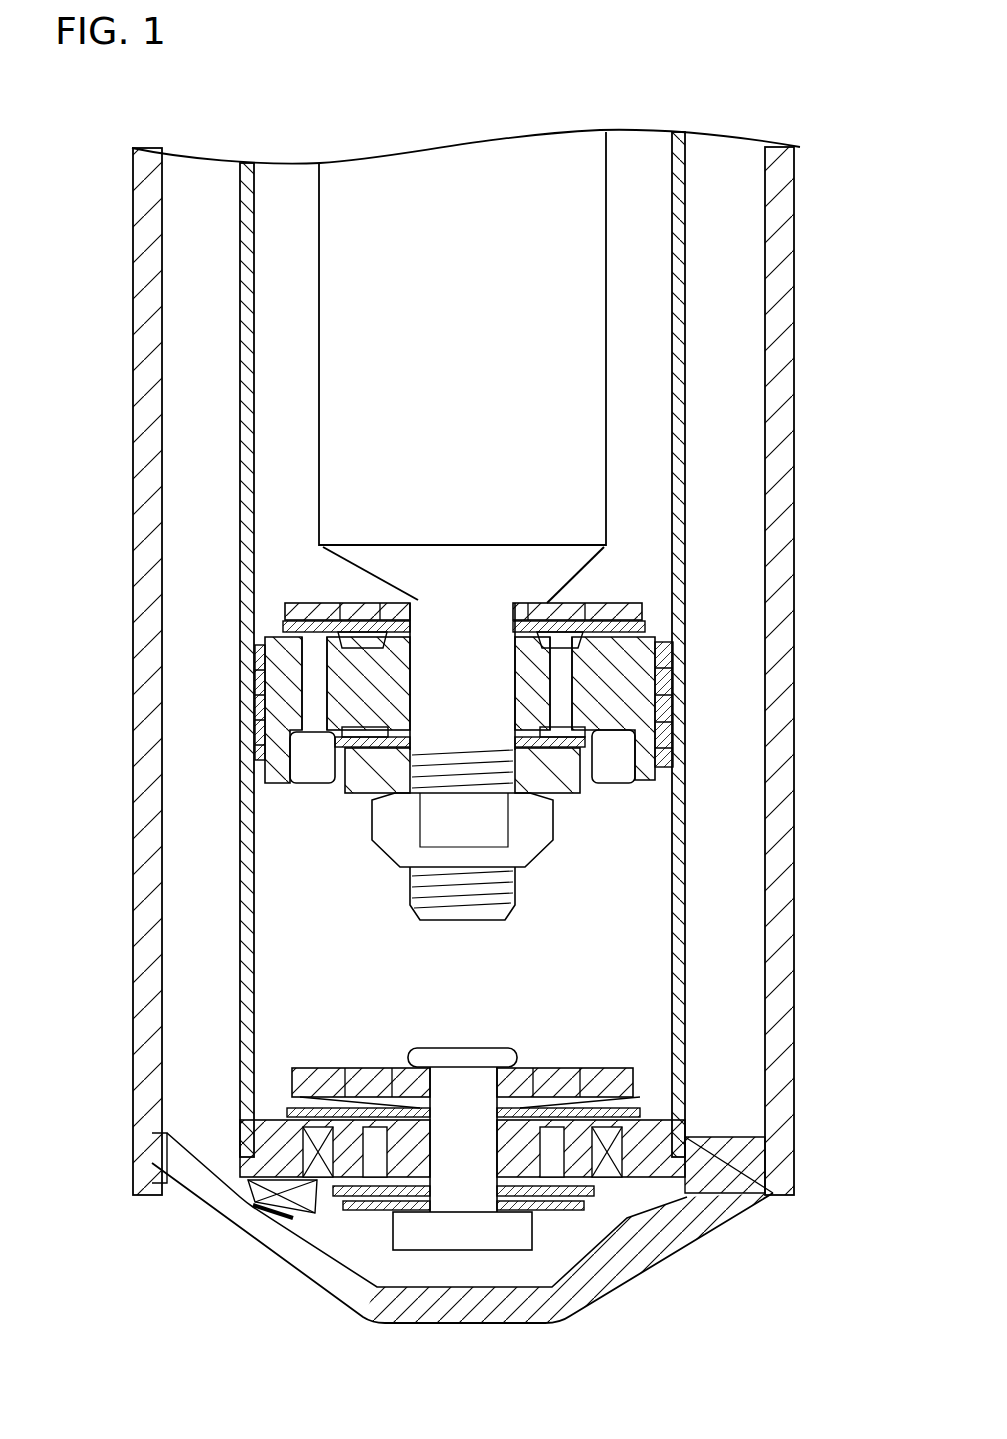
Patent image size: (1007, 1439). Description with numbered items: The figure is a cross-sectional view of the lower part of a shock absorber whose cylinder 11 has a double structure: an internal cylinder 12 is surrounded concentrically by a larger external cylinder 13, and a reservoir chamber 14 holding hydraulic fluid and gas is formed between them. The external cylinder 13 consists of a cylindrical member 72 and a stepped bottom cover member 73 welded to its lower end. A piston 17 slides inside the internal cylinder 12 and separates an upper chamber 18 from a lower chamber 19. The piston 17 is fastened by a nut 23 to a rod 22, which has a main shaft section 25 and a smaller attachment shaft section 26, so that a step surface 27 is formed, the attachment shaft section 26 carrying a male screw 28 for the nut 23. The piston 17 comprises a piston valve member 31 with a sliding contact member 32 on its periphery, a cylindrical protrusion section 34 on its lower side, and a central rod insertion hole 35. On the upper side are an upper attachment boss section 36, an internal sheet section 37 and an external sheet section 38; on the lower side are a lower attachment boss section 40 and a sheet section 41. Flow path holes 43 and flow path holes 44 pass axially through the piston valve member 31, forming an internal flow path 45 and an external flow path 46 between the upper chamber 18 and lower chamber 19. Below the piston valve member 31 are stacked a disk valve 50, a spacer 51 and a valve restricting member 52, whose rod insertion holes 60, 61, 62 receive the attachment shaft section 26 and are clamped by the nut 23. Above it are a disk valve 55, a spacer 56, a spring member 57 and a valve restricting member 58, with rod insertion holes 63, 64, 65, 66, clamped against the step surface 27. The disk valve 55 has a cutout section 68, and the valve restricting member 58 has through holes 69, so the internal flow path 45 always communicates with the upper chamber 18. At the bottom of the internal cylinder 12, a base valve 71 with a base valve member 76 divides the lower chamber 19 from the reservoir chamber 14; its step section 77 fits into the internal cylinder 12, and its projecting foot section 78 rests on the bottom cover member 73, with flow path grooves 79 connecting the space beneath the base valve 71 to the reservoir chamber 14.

The cylinder 11 is at (837, 62).
The internal cylinder 12 is at (686, 168).
The external cylinder 13 is at (797, 176).
The reservoir chamber 14 is at (700, 266).
The piston 17 is at (676, 687).
The upper chamber 18 is at (280, 266).
The lower chamber 19 is at (277, 1018).
The rod 22 is at (606, 326).
The nut 23 is at (517, 737).
The main shaft section 25 is at (523, 168).
The attachment shaft section 26 is at (520, 887).
The step surface 27 is at (563, 680).
The male screw 28 is at (530, 860).
The piston valve member 31 is at (280, 722).
The sliding contact member 32 is at (657, 757).
The cylindrical protrusion section 34 is at (648, 778).
The rod insertion hole 35 is at (513, 683).
The upper attachment boss section 36 is at (372, 632).
The internal sheet section 37 is at (300, 612).
The external sheet section 38 is at (287, 605).
The lower attachment boss section 40 is at (405, 760).
The sheet section 41 is at (335, 752).
The flow path hole 43 is at (657, 640).
The flow path hole 44 is at (312, 698).
The flow path 45 is at (560, 667).
The flow path 46 is at (310, 658).
The disk valve 50 is at (540, 822).
The spacer 51 is at (397, 748).
The valve restricting member 52 is at (372, 783).
The disk valve 55 is at (640, 632).
The spacer 56 is at (535, 622).
The spring member 57 is at (597, 617).
The valve restricting member 58 is at (640, 610).
The rod insertion hole 60 is at (456, 770).
The rod insertion hole 61 is at (447, 760).
The rod insertion hole 62 is at (433, 755).
The rod insertion hole 63 is at (413, 630).
The rod insertion hole 64 is at (405, 628).
The rod insertion hole 65 is at (398, 626).
The rod insertion hole 66 is at (390, 624).
The cutout section 68 is at (328, 632).
The through hole 69 is at (347, 620).
The base valve 71 is at (652, 1104).
The cylindrical member 72 is at (796, 1086).
The bottom cover member 73 is at (694, 1220).
The base valve member 76 is at (689, 1175).
The step section 77 is at (682, 1133).
The projecting foot section 78 is at (657, 1192).
The flow path groove 79 is at (283, 1203).